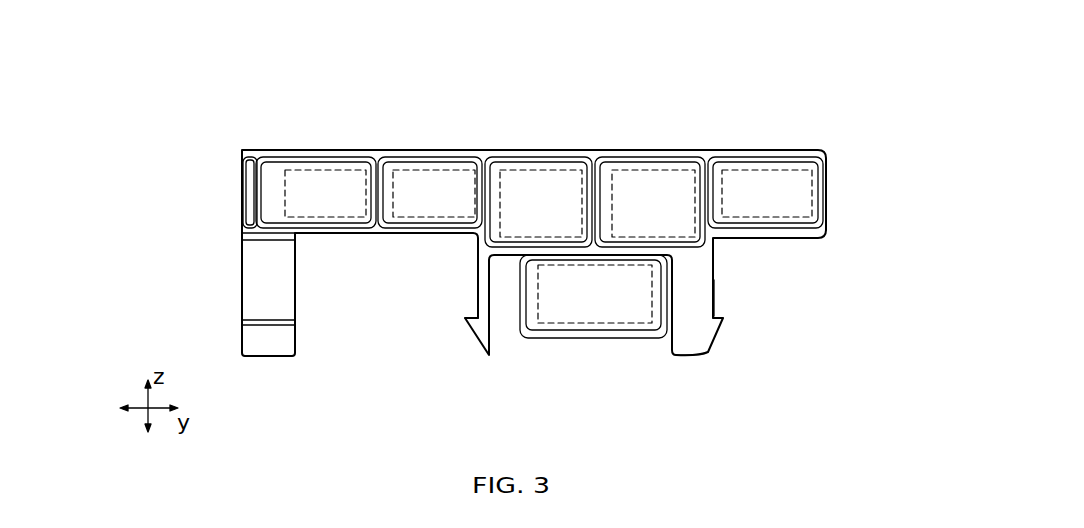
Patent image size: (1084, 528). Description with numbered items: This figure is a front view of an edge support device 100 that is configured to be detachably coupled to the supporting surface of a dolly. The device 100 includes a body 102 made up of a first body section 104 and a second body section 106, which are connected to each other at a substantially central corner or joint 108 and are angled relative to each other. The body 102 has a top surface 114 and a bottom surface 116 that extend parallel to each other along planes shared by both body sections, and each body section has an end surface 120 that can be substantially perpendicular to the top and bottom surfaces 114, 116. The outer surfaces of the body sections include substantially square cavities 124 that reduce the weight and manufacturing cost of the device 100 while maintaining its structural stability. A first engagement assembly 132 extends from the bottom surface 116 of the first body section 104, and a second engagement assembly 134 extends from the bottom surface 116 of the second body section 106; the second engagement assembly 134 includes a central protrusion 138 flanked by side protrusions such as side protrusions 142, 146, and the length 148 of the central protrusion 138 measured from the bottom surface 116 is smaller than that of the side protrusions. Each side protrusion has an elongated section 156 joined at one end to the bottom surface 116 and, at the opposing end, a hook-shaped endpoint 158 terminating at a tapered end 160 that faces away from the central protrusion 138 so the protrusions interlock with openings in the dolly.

The edge support device 100 is at (817, 100).
The body 102 is at (432, 150).
The first body section 104 is at (262, 127).
The second body section 106 is at (634, 132).
The corner or joint 108 is at (243, 150).
The top surface 114 is at (795, 152).
The bottom surface 116 is at (378, 236).
The end surface 120 is at (826, 205).
The cavity 124 is at (548, 172).
The first engagement assembly 132 is at (234, 289).
The second engagement assembly 134 is at (620, 353).
The central protrusion 138 is at (585, 302).
The side protrusion 142 is at (277, 293).
The side protrusion 146 is at (478, 300).
The length of the central protrusion 148 is at (714, 275).
The elongated section 156 is at (714, 300).
The endpoint 158 is at (722, 338).
The tapered end 160 is at (708, 354).